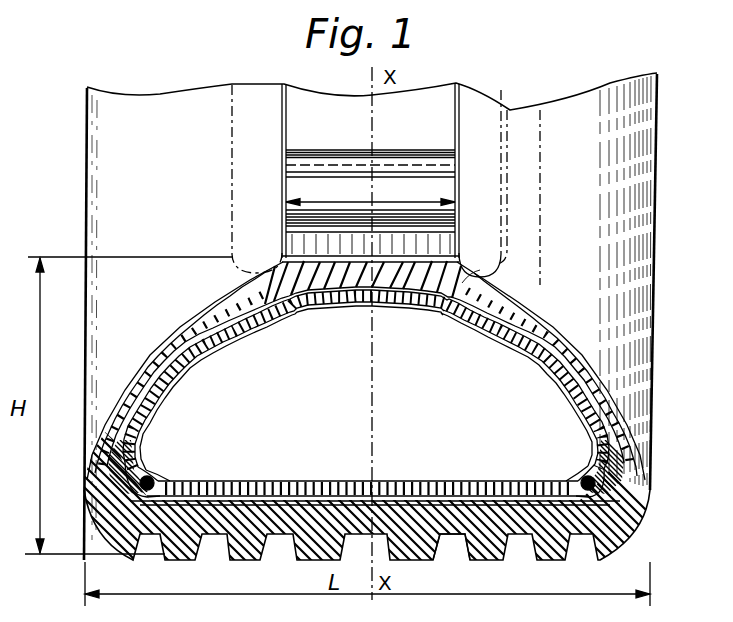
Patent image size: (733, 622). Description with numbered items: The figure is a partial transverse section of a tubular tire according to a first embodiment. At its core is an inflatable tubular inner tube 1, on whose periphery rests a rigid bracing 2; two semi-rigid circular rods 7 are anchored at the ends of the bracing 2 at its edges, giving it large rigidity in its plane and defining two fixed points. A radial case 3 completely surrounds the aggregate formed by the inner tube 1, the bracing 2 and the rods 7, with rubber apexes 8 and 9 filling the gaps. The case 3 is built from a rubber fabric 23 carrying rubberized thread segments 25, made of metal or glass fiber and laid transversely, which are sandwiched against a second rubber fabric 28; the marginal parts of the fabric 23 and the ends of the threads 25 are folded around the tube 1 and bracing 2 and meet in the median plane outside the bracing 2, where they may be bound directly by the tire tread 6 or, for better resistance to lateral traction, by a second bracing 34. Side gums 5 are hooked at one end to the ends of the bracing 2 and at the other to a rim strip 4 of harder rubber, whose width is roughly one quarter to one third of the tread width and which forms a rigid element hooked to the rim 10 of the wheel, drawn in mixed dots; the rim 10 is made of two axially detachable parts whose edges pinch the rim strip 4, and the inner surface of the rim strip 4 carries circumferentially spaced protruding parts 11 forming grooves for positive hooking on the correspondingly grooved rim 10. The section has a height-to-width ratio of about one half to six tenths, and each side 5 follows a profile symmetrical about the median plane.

The inflatable tubular inner tube 1 is at (472, 318).
The rigid bracing 2 is at (303, 470).
The radial case 3 is at (522, 322).
The rim strip 4 is at (462, 283).
The side gums 5 is at (152, 349).
The tire tread 6 is at (185, 552).
The semi-rigid circular rods 7 is at (157, 470).
The rubber apex 8 is at (185, 486).
The rubber apex 9 is at (150, 476).
The rim 10 is at (232, 147).
The protruding parts 11 is at (305, 177).
The rubber fabric 23 is at (183, 335).
The rubberized thread segments 25 is at (193, 330).
The rubber fabric 28 is at (218, 316).
The second bracing 34 is at (443, 538).